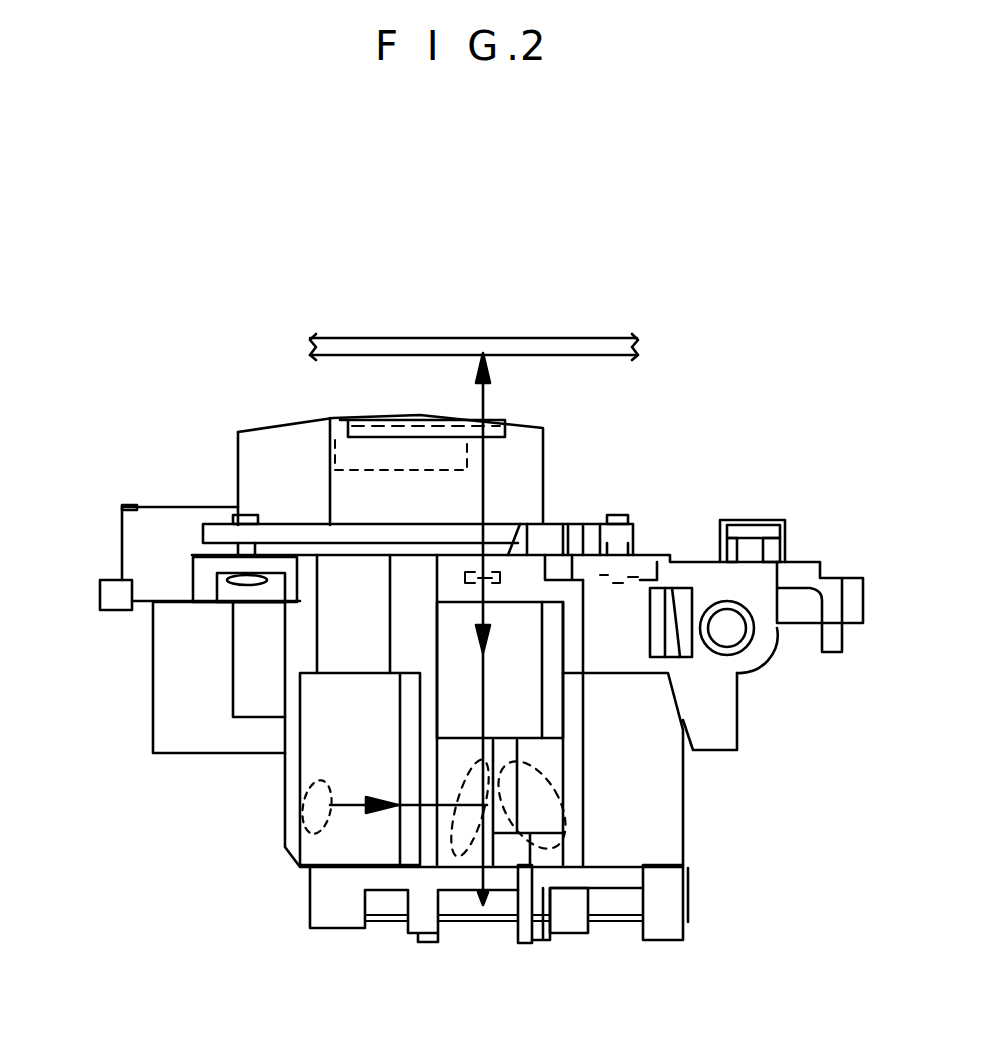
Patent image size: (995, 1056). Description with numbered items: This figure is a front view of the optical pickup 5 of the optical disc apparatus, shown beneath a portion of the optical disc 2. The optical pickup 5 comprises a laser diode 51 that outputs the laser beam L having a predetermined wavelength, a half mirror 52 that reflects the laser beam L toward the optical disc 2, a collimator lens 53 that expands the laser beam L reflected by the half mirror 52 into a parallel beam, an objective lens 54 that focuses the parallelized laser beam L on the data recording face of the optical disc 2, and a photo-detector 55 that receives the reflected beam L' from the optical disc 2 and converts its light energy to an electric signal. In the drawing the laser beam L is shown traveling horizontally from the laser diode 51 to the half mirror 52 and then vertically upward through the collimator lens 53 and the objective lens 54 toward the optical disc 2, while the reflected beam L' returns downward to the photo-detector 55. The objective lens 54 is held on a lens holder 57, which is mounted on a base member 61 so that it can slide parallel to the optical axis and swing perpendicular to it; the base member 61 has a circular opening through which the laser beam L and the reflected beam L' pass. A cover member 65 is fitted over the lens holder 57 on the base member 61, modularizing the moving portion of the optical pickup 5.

The optical disc 2 is at (537, 340).
The optical pickup 5 is at (792, 198).
The laser diode 51 is at (283, 843).
The half mirror 52 is at (572, 933).
The collimator lens 53 is at (495, 532).
The objective lens 54 is at (513, 408).
The photo-detector 55 is at (473, 933).
The lens holder 57 is at (330, 432).
The base member 61 is at (297, 530).
The cover member 65 is at (275, 463).
The laser beam L is at (325, 629).
The reflected beam L' is at (270, 656).